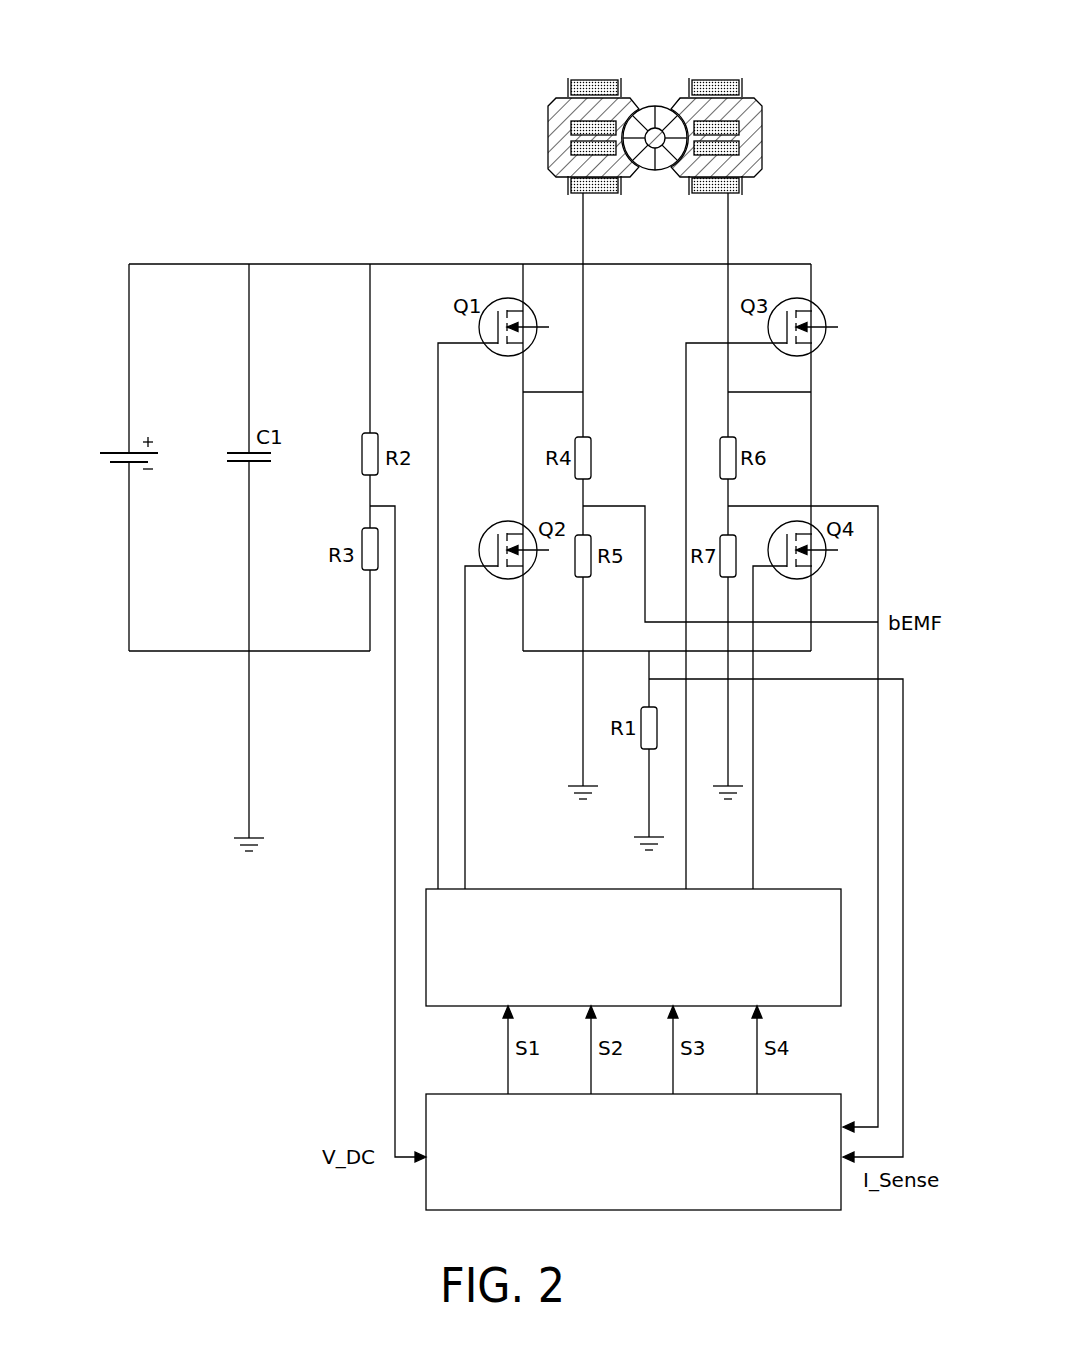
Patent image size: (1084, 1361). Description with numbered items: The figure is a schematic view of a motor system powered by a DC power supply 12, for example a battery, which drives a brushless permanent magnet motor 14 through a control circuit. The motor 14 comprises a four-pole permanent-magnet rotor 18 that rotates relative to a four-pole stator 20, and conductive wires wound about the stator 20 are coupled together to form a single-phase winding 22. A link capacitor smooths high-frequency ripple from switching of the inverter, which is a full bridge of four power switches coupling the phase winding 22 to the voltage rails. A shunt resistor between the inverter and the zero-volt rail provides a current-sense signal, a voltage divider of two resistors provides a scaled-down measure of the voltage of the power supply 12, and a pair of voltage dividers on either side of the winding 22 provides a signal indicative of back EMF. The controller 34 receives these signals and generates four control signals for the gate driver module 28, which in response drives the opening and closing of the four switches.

The DC power supply 12 is at (110, 436).
The brushless permanent magnet motor 14 is at (642, 106).
The permanent-magnet rotor 18 is at (656, 124).
The stator 20 is at (766, 140).
The single-phase winding 22 is at (715, 81).
The gate driver module 28 is at (808, 889).
The controller 34 is at (808, 1094).